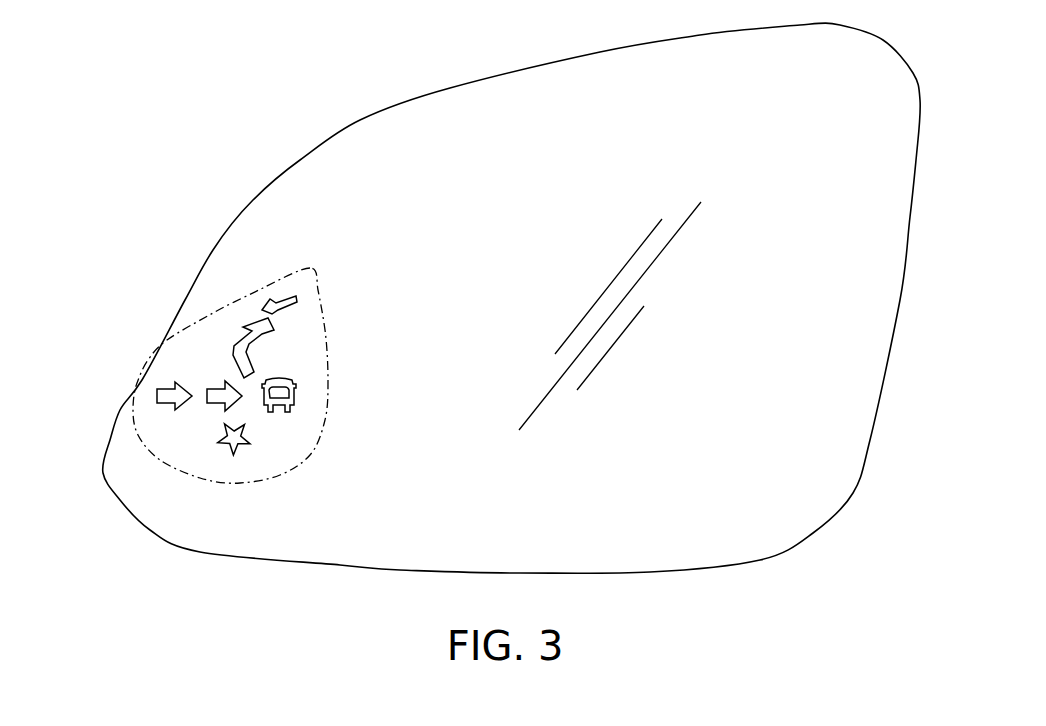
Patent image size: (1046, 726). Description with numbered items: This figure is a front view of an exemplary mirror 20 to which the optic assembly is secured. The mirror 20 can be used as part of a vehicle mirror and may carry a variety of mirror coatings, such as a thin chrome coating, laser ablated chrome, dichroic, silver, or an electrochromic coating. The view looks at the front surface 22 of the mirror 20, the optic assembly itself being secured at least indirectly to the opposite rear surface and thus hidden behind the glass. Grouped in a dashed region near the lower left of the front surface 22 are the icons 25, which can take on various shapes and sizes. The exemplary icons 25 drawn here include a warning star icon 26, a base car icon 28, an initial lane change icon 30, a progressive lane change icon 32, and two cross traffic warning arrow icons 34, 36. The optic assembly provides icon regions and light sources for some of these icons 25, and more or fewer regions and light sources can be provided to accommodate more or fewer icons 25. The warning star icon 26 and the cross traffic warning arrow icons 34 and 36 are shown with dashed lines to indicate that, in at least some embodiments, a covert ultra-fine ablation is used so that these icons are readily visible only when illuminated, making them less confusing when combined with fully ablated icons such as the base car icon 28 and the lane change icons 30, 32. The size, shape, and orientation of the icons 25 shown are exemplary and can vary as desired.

The mirror 20 is at (142, 598).
The front surface 22 is at (335, 542).
The icons 25 is at (322, 327).
The warning star icon 26 is at (242, 452).
The base car icon 28 is at (300, 395).
The initial lane change icon 30 is at (232, 348).
The progressive lane change icon 32 is at (292, 292).
The cross traffic warning arrow icon 34 is at (157, 393).
The cross traffic warning arrow icon 36 is at (207, 393).